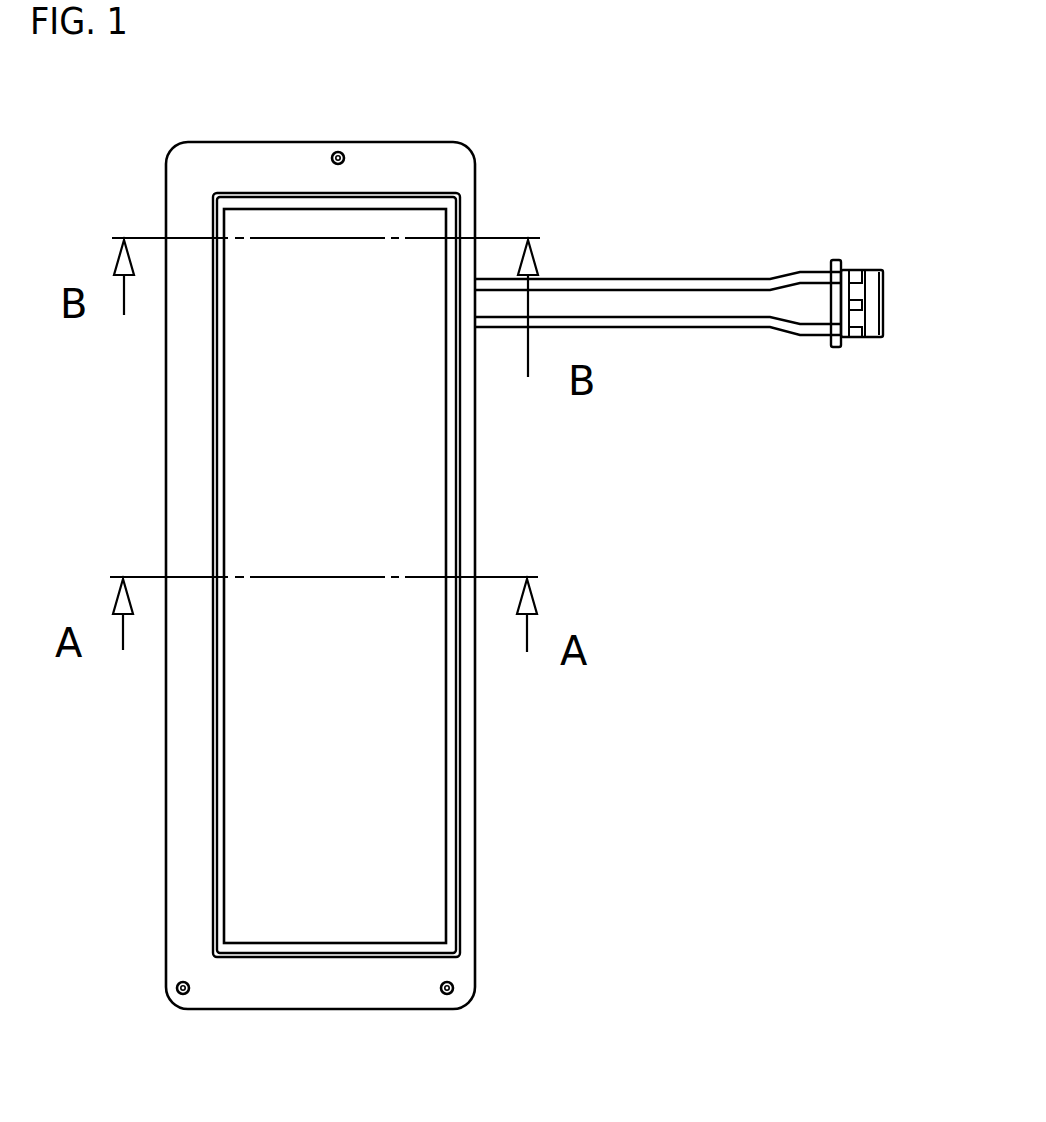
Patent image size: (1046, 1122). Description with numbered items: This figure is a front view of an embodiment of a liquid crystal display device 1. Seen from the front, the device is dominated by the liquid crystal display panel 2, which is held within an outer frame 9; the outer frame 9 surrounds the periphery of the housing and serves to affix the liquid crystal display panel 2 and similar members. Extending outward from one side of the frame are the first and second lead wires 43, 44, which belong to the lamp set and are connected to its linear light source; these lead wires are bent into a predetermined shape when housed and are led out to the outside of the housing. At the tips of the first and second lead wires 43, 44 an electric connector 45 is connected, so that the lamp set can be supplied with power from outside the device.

The liquid crystal display device 1 is at (673, 128).
The liquid crystal display panel 2 is at (423, 875).
The outer frame 9 is at (328, 997).
The first lead wire 43 is at (620, 283).
The second lead wire 44 is at (623, 320).
The electric connector 45 is at (873, 282).